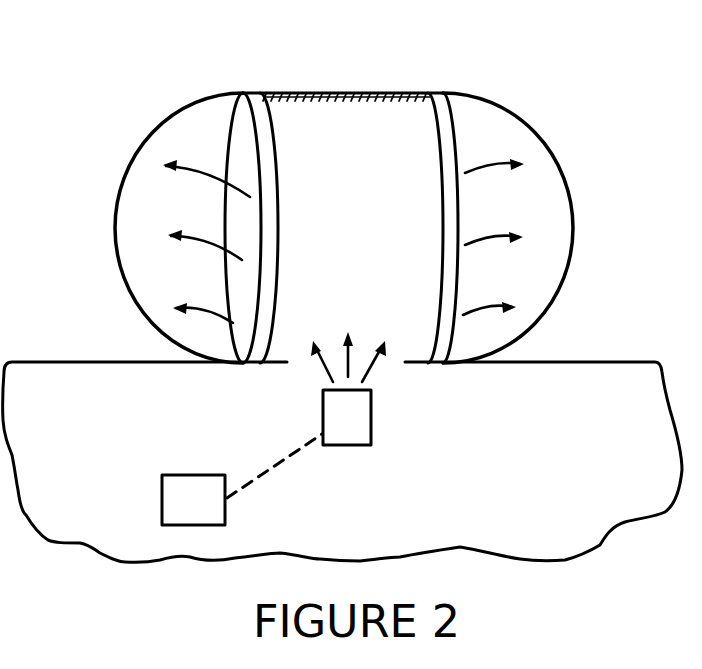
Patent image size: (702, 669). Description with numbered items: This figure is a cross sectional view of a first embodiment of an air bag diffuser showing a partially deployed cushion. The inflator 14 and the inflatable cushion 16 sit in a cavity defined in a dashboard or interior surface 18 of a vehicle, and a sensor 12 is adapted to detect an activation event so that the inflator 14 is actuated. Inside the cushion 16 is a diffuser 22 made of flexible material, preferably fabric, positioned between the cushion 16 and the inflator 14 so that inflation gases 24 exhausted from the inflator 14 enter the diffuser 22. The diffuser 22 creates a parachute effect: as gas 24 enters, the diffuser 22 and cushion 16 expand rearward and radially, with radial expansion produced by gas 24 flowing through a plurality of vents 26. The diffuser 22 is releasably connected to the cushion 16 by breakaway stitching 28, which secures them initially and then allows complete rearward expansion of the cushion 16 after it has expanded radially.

The sensor 12 is at (160, 500).
The inflator 14 is at (372, 425).
The inflatable cushion 16 is at (557, 160).
The interior surface 18 is at (62, 361).
The diffuser 22 is at (420, 152).
The inflation gases 24 is at (378, 364).
The vents 26 is at (235, 215).
The breakaway stitching 28 is at (325, 93).